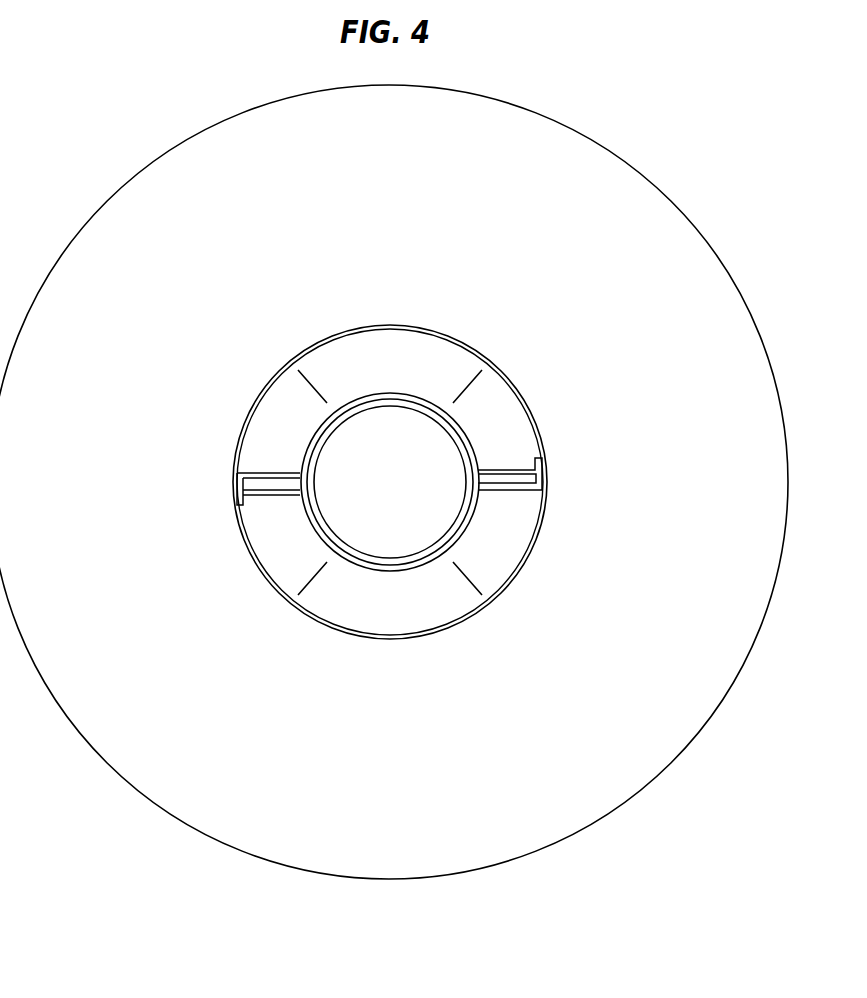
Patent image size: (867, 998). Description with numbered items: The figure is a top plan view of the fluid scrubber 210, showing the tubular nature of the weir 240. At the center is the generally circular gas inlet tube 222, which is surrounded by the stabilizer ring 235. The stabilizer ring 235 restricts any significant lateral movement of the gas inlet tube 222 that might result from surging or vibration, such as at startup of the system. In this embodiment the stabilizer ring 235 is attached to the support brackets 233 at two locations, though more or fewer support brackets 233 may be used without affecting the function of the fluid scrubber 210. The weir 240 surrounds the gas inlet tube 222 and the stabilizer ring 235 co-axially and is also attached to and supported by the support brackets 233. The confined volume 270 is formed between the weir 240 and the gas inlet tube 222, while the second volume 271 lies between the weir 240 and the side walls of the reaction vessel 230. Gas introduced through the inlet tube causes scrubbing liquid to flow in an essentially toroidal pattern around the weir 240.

The fluid scrubber 210 is at (614, 82).
The reaction vessel 230 is at (707, 238).
The second volume 271 is at (703, 355).
The weir 240 is at (515, 383).
The confined volume 270 is at (295, 442).
The support brackets 233 is at (505, 492).
The stabilizer ring 235 is at (403, 447).
The gas inlet tube 222 is at (390, 482).